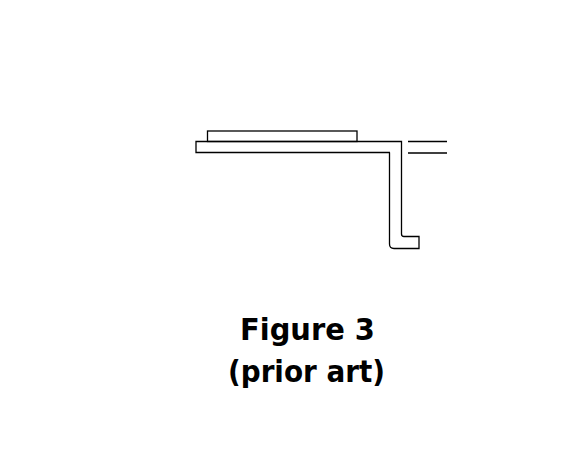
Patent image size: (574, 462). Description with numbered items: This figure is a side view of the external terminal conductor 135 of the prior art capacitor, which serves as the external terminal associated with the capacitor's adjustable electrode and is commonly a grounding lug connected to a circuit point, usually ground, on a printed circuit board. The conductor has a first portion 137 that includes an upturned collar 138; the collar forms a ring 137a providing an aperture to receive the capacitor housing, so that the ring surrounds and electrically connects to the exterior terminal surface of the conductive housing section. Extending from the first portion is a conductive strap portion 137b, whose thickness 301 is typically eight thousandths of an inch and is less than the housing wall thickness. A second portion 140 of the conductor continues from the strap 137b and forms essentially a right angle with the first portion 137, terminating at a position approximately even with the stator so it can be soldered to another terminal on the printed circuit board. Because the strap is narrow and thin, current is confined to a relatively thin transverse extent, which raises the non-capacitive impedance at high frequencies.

The external conductor 135 is at (296, 134).
The first portion 137 is at (326, 139).
The ring 137a is at (253, 152).
The conductive strap portion 137b is at (369, 137).
The upturned collar 138 is at (213, 135).
The second portion 140 is at (395, 200).
The thickness 301 is at (425, 161).